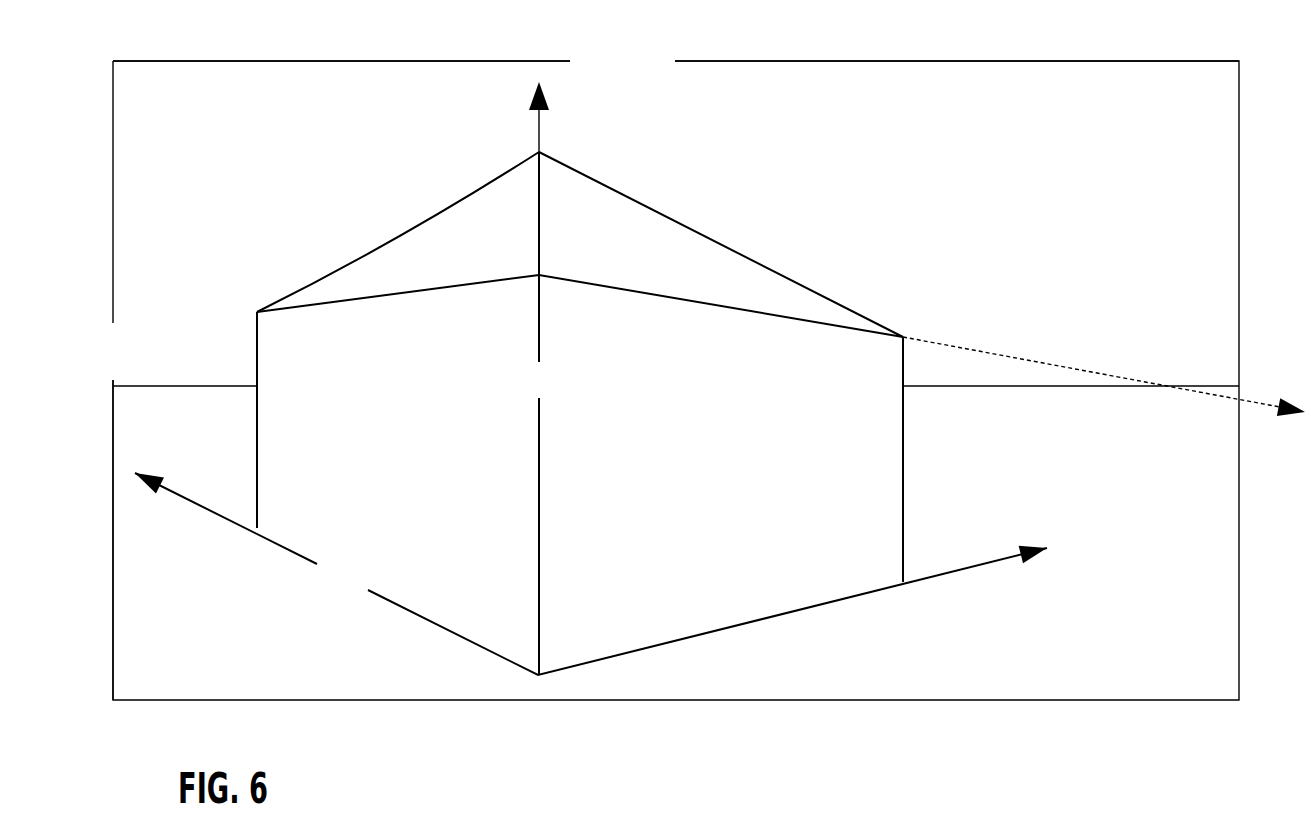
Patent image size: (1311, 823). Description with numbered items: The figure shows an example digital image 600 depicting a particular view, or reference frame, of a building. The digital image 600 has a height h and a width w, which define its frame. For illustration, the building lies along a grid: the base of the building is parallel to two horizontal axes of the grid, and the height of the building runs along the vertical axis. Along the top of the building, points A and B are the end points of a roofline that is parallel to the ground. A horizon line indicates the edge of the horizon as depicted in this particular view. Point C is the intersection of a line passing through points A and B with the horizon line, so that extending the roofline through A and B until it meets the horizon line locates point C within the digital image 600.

The digital image 600 is at (676, 398).
The point A is at (554, 254).
The point B is at (915, 310).
The point C is at (1182, 361).
The width w is at (676, 65).
The height h is at (152, 521).